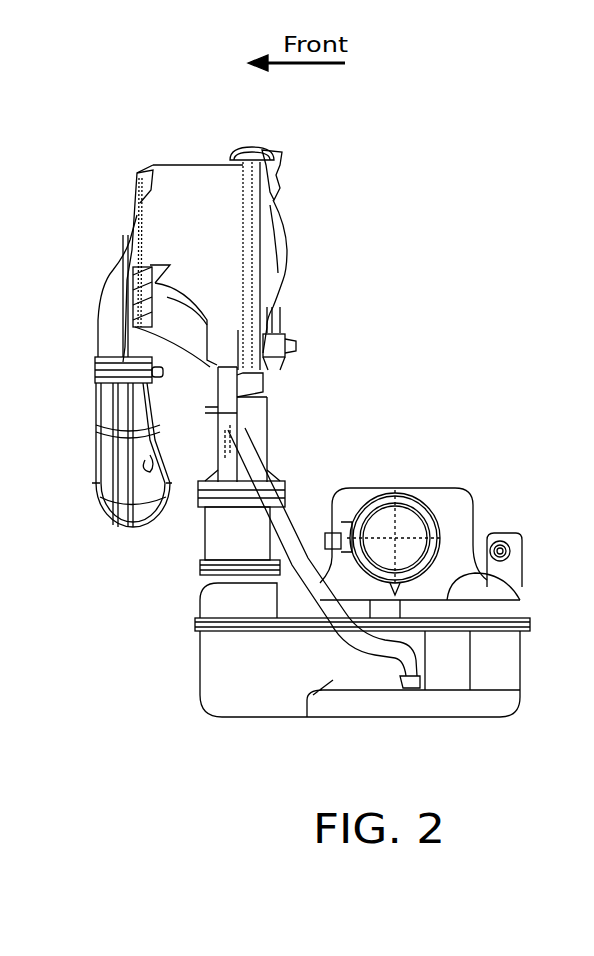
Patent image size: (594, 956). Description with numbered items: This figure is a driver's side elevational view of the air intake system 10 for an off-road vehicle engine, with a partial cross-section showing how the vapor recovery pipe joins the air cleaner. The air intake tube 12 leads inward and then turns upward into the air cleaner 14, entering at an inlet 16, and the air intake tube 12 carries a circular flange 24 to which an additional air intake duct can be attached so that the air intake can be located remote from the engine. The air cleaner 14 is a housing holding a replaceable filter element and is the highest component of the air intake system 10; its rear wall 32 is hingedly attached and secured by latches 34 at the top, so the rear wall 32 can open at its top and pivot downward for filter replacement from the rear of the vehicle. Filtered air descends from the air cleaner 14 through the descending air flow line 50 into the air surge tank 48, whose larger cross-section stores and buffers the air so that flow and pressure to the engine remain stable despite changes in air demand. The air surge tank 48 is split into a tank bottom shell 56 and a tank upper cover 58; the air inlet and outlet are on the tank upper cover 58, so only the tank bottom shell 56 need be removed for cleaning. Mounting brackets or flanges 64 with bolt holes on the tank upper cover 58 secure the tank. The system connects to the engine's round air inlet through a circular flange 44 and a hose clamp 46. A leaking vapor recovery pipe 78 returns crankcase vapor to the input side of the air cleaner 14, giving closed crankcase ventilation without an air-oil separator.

The air intake system 10 is at (402, 222).
The air intake tube 12 is at (150, 452).
The air cleaner 14 is at (190, 172).
The inlet 16 is at (112, 308).
The circular flange 24 is at (142, 530).
The rear wall 32 is at (278, 278).
The latches 34 is at (270, 150).
The circular flange 44 is at (427, 507).
The hose clamp 46 is at (330, 540).
The air surge tank 48 is at (205, 672).
The descending air flow line 50 is at (252, 430).
The tank bottom shell 56 is at (505, 665).
The tank upper cover 58 is at (220, 600).
The mounting brackets or flanges 64 is at (523, 543).
The leaking vapor recovery pipe 78 is at (317, 598).